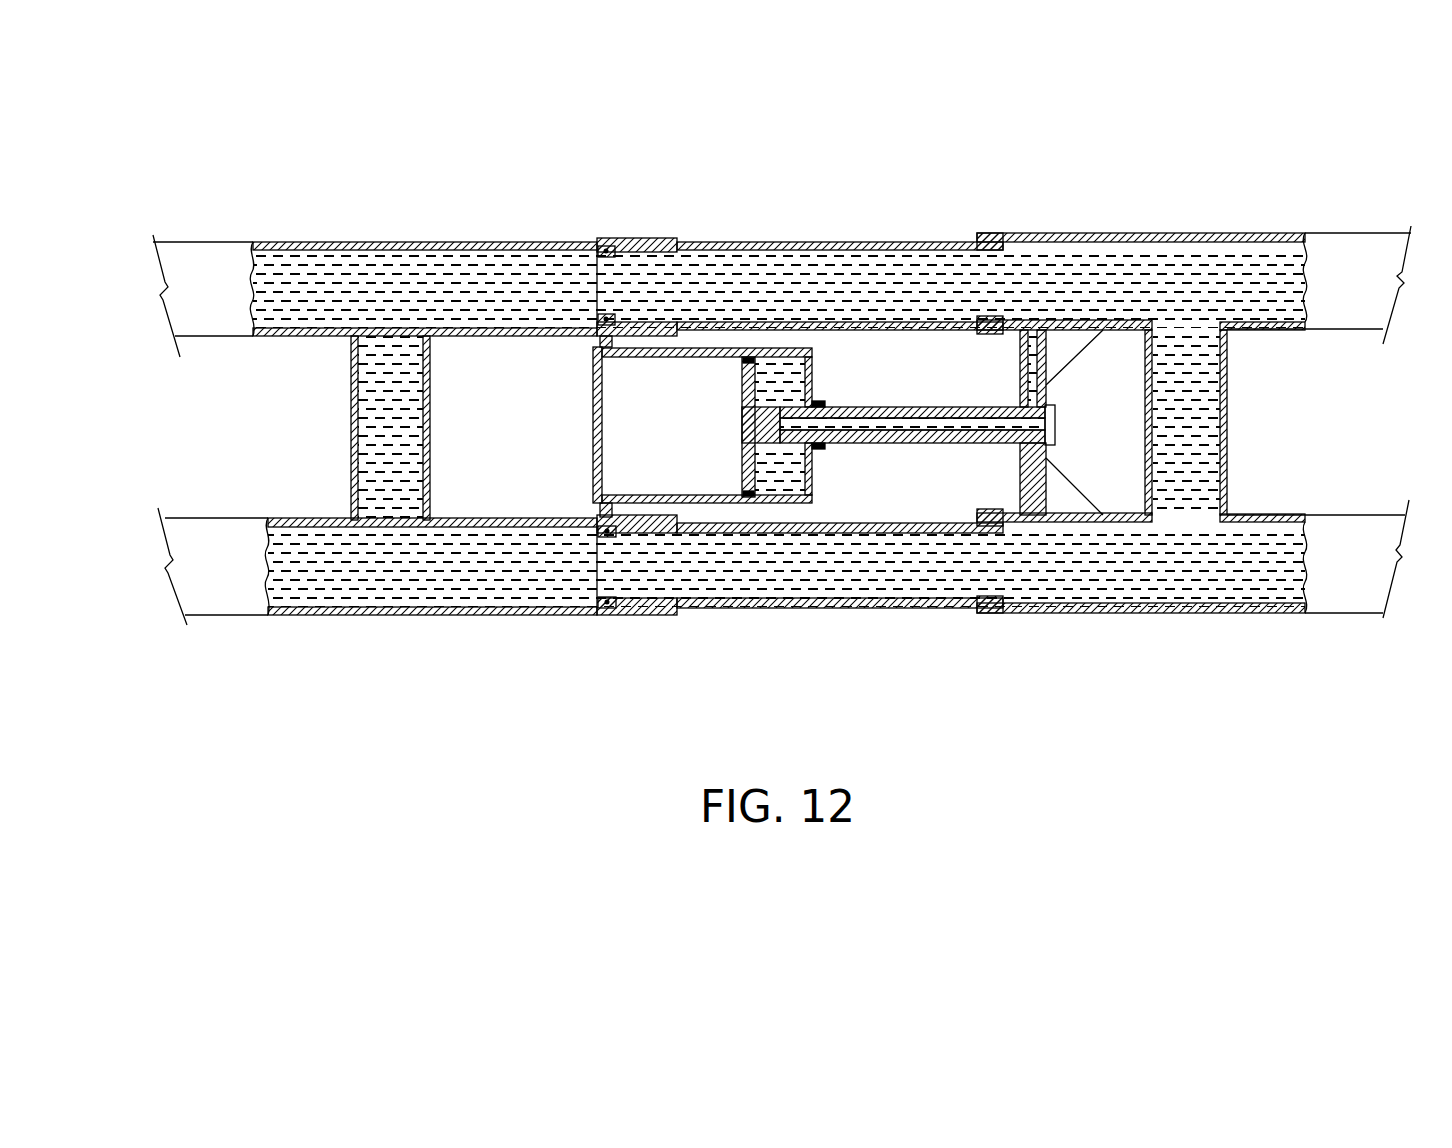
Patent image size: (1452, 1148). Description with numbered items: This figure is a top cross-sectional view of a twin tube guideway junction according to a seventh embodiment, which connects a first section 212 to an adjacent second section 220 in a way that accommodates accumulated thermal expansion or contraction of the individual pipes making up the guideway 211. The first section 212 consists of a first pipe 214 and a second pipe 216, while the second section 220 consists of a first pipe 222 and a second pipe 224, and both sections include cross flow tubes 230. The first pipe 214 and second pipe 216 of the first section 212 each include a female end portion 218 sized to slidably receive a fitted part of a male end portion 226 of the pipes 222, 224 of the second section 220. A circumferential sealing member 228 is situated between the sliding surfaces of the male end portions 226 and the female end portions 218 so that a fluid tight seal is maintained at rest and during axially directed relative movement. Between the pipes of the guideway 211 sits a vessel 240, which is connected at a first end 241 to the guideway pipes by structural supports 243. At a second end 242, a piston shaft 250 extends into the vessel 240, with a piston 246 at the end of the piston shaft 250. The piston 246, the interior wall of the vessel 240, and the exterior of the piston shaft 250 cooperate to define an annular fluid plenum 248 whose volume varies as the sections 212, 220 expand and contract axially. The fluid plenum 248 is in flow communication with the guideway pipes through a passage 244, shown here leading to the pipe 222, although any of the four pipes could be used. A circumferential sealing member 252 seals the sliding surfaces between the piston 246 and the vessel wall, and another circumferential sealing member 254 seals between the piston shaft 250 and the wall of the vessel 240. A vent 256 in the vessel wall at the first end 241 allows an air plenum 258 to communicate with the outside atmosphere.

The guideway 211 is at (258, 416).
The first section 212 is at (353, 212).
The first pipe 214 is at (191, 240).
The second pipe 216 is at (218, 622).
The female end portion 218 is at (682, 243).
The second section 220 is at (1067, 210).
The first pipe 222 is at (1348, 230).
The second pipe 224 is at (1342, 612).
The male end portion 226 is at (733, 243).
The circumferential sealing member 228 is at (596, 230).
The cross flow tubes 230 is at (350, 408).
The vessel 240 is at (770, 352).
The first end 241 is at (566, 406).
The second end 242 is at (828, 375).
The structural supports 243 is at (600, 341).
The passage 244 is at (1038, 362).
The piston 246 is at (742, 397).
The annular fluid plenum 248 is at (790, 375).
The piston shaft 250 is at (963, 442).
The circumferential sealing member 252 is at (755, 500).
The circumferential sealing member 254 is at (820, 449).
The vent 256 is at (593, 425).
The air plenum 258 is at (617, 479).